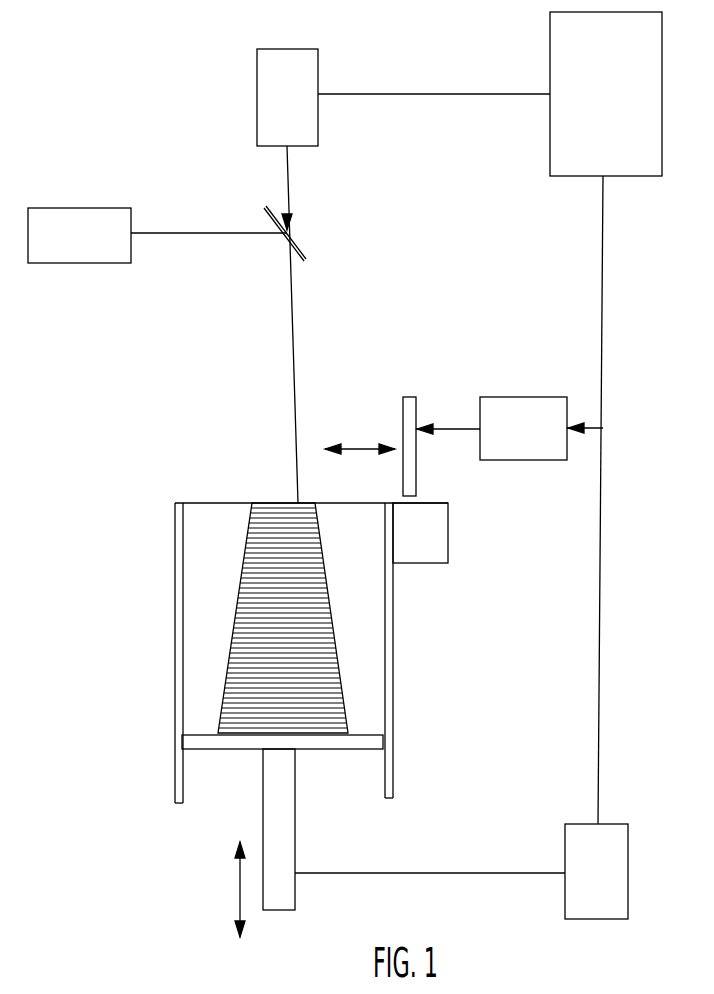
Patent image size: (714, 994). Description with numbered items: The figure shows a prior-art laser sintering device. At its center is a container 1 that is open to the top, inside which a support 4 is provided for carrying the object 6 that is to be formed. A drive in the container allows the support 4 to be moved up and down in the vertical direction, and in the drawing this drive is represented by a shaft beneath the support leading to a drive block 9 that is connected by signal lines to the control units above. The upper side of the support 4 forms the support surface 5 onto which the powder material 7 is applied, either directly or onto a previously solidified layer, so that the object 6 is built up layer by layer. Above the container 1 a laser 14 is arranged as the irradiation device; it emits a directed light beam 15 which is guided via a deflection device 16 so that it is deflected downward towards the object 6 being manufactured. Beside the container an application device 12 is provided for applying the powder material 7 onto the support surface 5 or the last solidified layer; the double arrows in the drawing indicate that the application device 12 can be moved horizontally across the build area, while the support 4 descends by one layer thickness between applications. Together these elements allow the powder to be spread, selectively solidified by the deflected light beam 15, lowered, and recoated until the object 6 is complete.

The container 1 is at (171, 644).
The support 4 is at (359, 751).
The support surface 5 is at (368, 735).
The object 6 is at (330, 598).
The powder material 7 is at (448, 538).
The drive unit 9 is at (565, 897).
The application device 12 is at (411, 397).
The laser 14 is at (90, 208).
The light beam 15 is at (205, 233).
The deflection device 16 is at (300, 249).